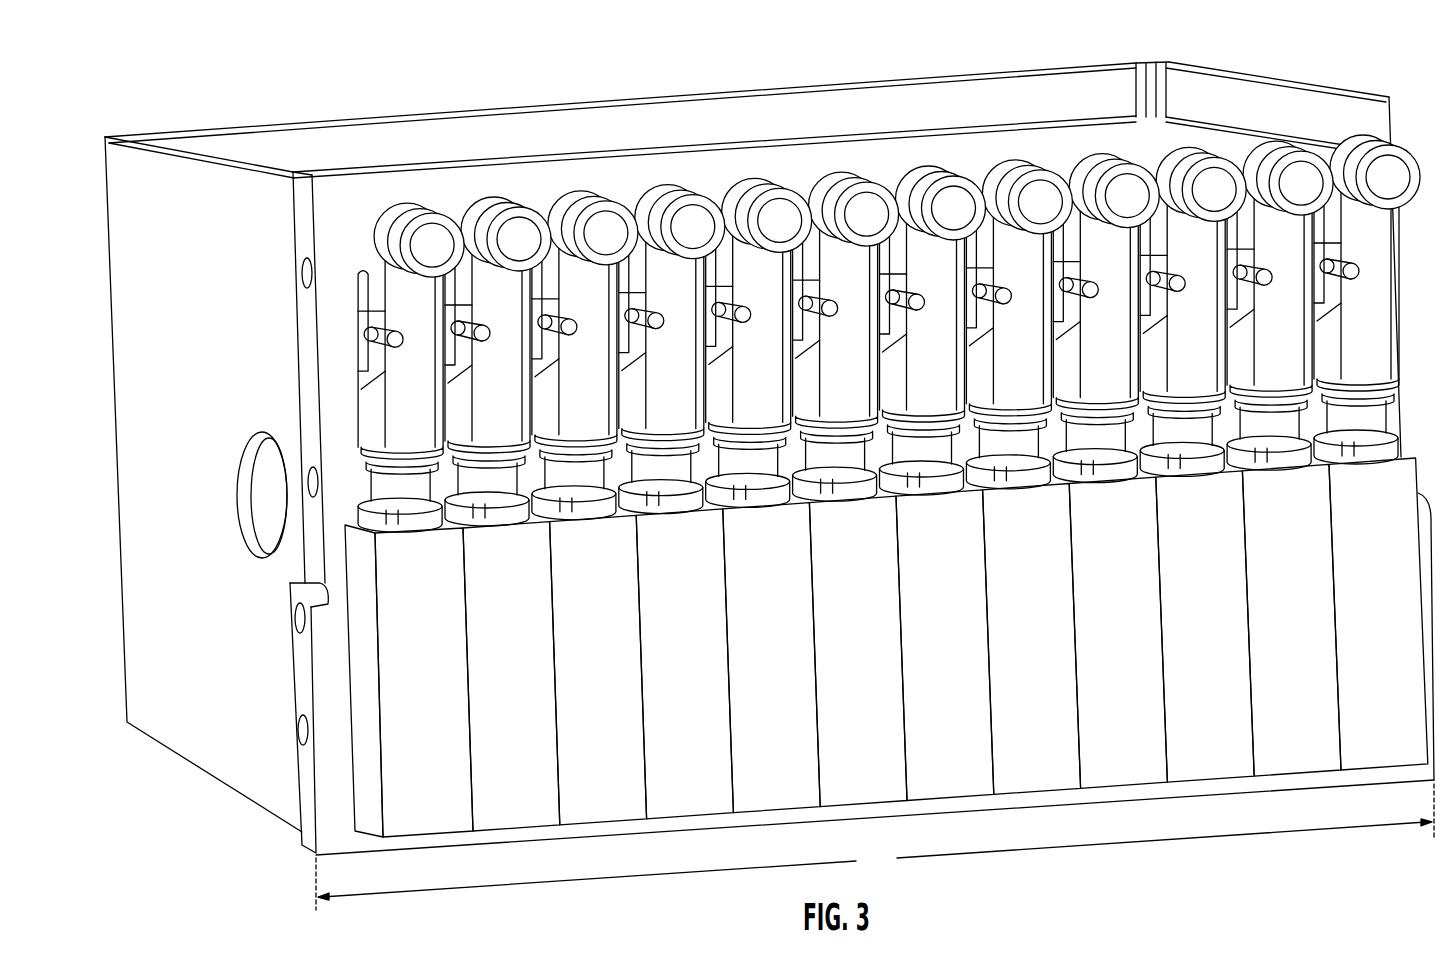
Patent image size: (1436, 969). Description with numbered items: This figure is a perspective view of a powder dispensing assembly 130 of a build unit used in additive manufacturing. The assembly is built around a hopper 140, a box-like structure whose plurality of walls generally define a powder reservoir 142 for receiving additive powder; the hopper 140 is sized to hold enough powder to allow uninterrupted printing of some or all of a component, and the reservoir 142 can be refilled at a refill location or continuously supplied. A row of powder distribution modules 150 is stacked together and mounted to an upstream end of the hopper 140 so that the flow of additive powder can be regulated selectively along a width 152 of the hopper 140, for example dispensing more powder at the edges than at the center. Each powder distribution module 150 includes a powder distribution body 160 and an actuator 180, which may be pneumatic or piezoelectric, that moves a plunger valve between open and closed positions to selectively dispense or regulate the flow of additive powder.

The powder dispensing assembly 130 is at (266, 52).
The hopper 140 is at (126, 218).
The powder reservoir 142 is at (478, 132).
The powder distribution modules 150 is at (1106, 766).
The width 152 is at (875, 847).
The powder distribution body 160 is at (613, 684).
The actuator 180 is at (837, 275).